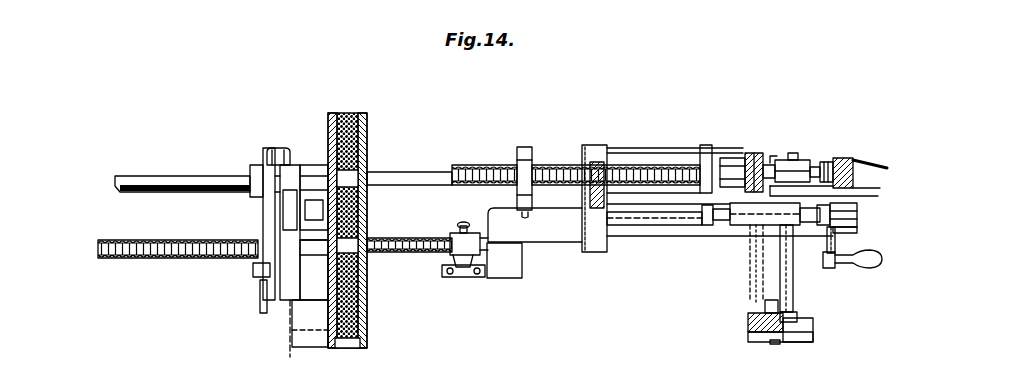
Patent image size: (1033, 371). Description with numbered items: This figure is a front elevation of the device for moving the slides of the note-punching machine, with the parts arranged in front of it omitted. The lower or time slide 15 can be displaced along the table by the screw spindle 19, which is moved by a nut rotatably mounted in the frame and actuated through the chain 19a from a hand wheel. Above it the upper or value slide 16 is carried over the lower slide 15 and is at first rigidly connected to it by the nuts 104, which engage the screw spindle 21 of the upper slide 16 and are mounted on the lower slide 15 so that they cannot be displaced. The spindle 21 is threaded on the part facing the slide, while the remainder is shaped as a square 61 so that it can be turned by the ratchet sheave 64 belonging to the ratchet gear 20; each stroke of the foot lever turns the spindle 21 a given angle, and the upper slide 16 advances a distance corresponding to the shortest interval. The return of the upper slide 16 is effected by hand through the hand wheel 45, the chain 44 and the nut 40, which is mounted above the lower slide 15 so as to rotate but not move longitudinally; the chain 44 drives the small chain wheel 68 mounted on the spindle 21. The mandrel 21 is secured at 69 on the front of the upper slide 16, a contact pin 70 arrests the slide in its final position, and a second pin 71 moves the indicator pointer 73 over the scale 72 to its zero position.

The square 61 is at (182, 171).
The ratchet sheave 64 is at (287, 162).
The ratchet gear 20 is at (267, 207).
The screw spindle 19 is at (182, 254).
The chain 19a is at (287, 313).
The spindle 21 is at (463, 186).
The nuts 104 is at (517, 173).
The lower slide 15 is at (547, 223).
The nut 40 is at (748, 157).
The small chain wheel 68 is at (758, 156).
The contact pin 70 is at (777, 158).
The securing point of mandrel 69 is at (826, 160).
The upper slide 16 is at (853, 157).
The second pin 71 is at (854, 193).
The chain 44 is at (748, 255).
The hand wheel 45 is at (752, 276).
The indicator pointer 73 is at (762, 295).
The scale 72 is at (760, 320).